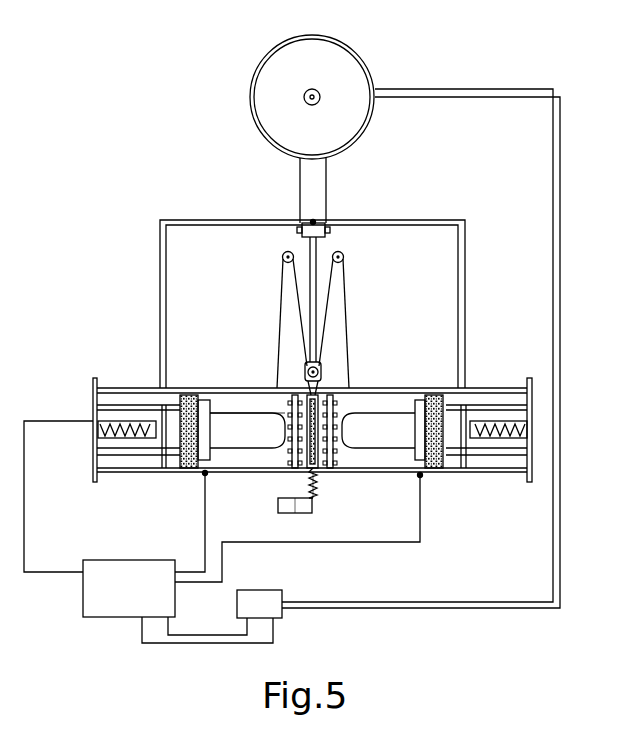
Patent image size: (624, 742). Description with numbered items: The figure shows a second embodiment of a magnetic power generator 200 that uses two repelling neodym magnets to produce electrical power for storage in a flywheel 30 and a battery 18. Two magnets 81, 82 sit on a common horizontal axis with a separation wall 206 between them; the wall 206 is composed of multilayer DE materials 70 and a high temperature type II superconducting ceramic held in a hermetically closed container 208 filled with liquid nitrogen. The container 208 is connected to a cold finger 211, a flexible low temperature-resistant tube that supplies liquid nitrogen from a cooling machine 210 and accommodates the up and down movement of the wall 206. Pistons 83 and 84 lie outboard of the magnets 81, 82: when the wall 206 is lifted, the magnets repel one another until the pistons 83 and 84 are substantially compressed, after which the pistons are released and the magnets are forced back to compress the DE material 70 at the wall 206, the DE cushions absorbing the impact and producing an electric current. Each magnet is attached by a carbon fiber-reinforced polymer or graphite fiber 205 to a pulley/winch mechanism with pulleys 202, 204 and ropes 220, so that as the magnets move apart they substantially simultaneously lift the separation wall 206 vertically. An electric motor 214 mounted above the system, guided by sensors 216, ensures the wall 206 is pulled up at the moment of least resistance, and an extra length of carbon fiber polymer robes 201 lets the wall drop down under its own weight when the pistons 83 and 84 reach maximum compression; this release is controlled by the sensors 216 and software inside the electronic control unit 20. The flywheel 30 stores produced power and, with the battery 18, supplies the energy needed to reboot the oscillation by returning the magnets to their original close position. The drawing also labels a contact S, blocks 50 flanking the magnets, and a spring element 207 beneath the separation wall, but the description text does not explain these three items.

The magnetic power generator 200 is at (163, 119).
The flywheel 30 is at (369, 63).
The sensors 216 is at (312, 221).
The electric motor 214 is at (325, 227).
The carbon fiber polymer robes 201 is at (308, 255).
The pulley 202 is at (340, 255).
The ropes 220 is at (275, 337).
The pulley 204 is at (313, 408).
The separation wall 206 is at (340, 416).
The multilayer DE materials 70 is at (178, 392).
The magnet blocks 50 is at (140, 403).
The carbon fiber-reinforced polymer or graphite fiber 205 is at (278, 415).
The piston 83 is at (132, 433).
The piston 84 is at (507, 442).
The magnet 81 is at (255, 432).
The magnet 82 is at (370, 432).
The return spring 207 is at (330, 470).
The cold finger 211 is at (316, 489).
The cooling machine 210 is at (280, 510).
The hermetically closed container 208 is at (312, 513).
The switch contact S is at (204, 474).
The electronic control unit 20 is at (93, 610).
The battery 18 is at (273, 618).